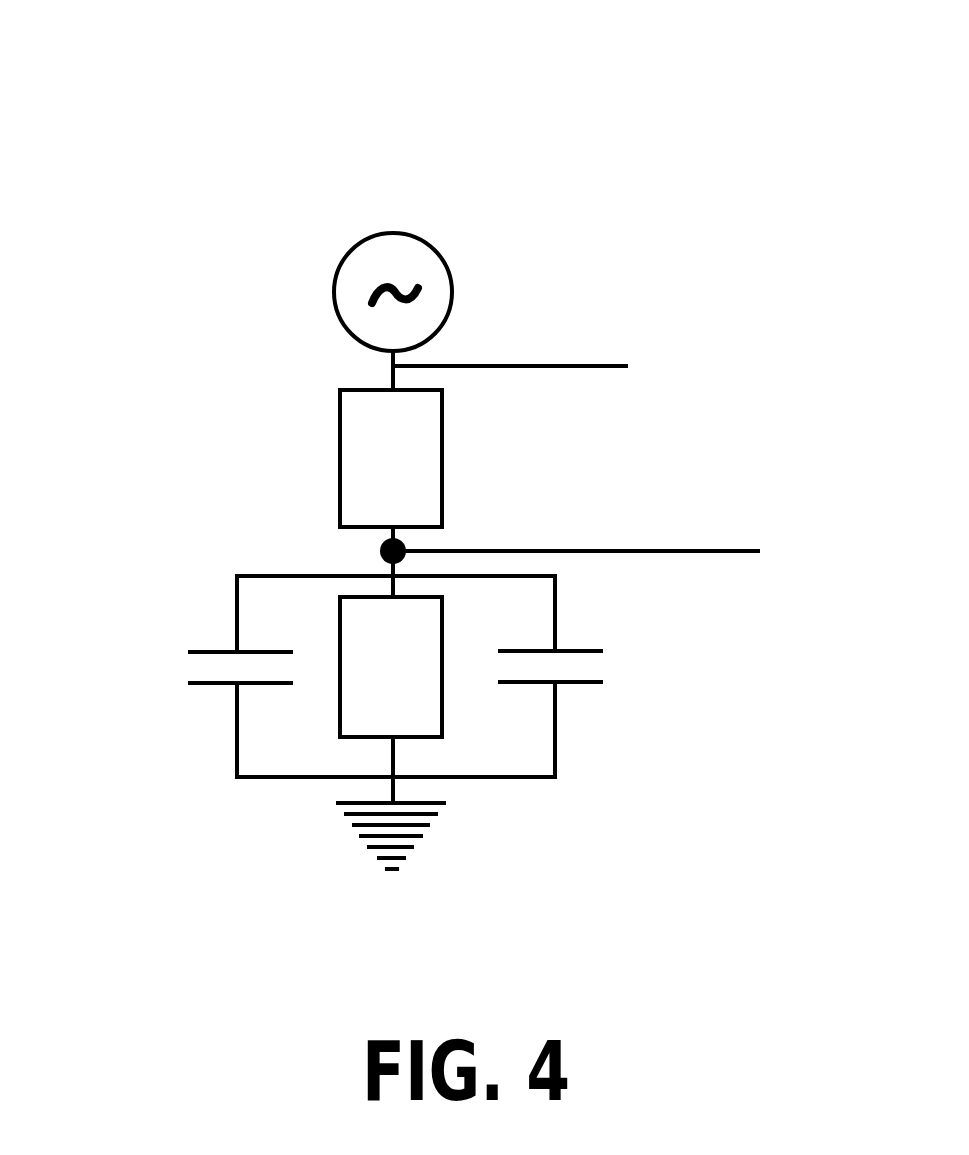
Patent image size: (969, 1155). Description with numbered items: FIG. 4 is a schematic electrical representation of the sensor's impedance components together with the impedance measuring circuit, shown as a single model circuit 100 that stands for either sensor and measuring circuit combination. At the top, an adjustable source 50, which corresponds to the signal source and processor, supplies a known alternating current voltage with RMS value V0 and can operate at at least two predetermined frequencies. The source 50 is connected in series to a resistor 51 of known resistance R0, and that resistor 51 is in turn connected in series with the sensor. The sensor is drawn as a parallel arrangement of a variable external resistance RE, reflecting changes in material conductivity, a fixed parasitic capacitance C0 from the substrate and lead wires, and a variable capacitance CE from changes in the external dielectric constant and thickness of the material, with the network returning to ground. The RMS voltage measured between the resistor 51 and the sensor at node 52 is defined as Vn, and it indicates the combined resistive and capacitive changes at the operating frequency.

The model circuit 100 is at (457, 436).
The adjustable source 50 is at (497, 242).
The resistor 51 is at (285, 430).
The node 52 is at (267, 548).